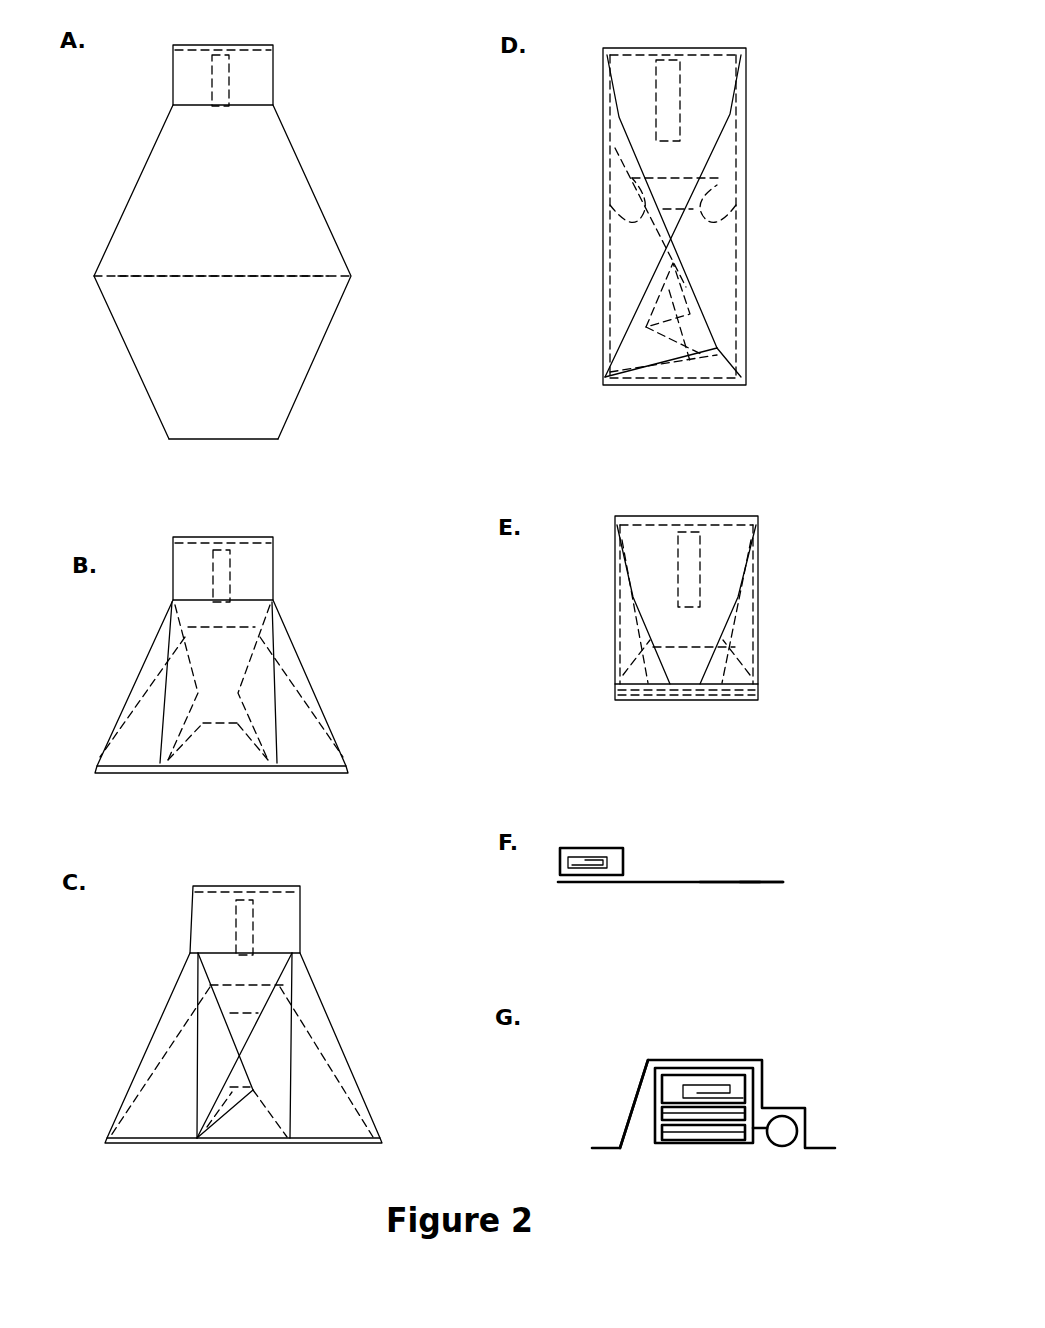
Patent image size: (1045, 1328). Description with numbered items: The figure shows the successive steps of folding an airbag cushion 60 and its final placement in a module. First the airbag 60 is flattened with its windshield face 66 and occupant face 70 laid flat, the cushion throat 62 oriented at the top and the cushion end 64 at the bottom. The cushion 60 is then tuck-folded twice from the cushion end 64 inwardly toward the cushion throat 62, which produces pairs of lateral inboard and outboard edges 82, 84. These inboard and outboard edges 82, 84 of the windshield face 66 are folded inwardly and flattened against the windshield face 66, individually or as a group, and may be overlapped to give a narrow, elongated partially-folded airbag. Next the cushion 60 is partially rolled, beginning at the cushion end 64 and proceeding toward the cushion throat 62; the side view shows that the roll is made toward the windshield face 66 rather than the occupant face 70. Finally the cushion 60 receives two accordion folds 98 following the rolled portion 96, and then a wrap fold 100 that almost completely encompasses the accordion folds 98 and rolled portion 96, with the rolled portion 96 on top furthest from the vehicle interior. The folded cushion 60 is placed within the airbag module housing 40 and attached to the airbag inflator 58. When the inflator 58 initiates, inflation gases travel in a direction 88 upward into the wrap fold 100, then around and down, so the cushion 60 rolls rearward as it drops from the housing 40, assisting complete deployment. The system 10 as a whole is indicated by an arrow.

In FIG. 2G, the system 10 is at (618, 1068).
In FIG. 2G, the airbag module housing 40 is at (627, 1123).
In FIG. 2G, the airbag inflator 58 is at (785, 1127).
In FIG. 2A, the airbag cushion 60 is at (233, 241).
In FIG. 2B, the airbag cushion 60 is at (235, 653).
In FIG. 2C, the airbag cushion 60 is at (275, 1015).
In FIG. 2D, the airbag cushion 60 is at (715, 221).
In FIG. 2E, the airbag cushion 60 is at (749, 595).
In FIG. 2F, the airbag cushion 60 is at (716, 862).
In FIG. 2G, the airbag cushion 60 is at (707, 1109).
In FIG. 2A, the cushion throat 62 is at (252, 60).
In FIG. 2B, the cushion throat 62 is at (262, 563).
In FIG. 2C, the cushion throat 62 is at (287, 913).
In FIG. 2D, the cushion throat 62 is at (721, 74).
In FIG. 2E, the cushion throat 62 is at (737, 538).
In FIG. 2F, the cushion throat 62 is at (783, 883).
In FIG. 2A, the cushion end 64 is at (248, 431).
In FIG. 2B, the cushion end 64 is at (330, 773).
In FIG. 2C, the cushion end 64 is at (340, 1143).
In FIG. 2D, the cushion end 64 is at (717, 374).
In FIG. 2A, the windshield face 66 is at (227, 250).
In FIG. 2B, the windshield face 66 is at (235, 752).
In FIG. 2C, the windshield face 66 is at (255, 1136).
In FIG. 2D, the windshield face 66 is at (677, 362).
In FIG. 2F, the windshield face 66 is at (713, 882).
In FIG. 2A, the occupant face 70 is at (227, 208).
In FIG. 2B, the occupant face 70 is at (235, 666).
In FIG. 2C, the occupant face 70 is at (246, 1001).
In FIG. 2D, the occupant face 70 is at (676, 193).
In FIG. 2E, the occupant face 70 is at (694, 661).
In FIG. 2F, the occupant face 70 is at (740, 883).
In FIG. 2A, the inboard edge 82 is at (308, 189).
In FIG. 2B, the inboard edge 82 is at (317, 693).
In FIG. 2C, the inboard edge 82 is at (330, 1104).
In FIG. 2D, the inboard edge 82 is at (739, 231).
In FIG. 2A, the outboard edge 84 is at (115, 189).
In FIG. 2B, the outboard edge 84 is at (128, 692).
In FIG. 2C, the outboard edge 84 is at (177, 1104).
In FIG. 2D, the outboard edge 84 is at (597, 238).
In FIG. 2G, the direction of inflation gases 88 is at (758, 1133).
In FIG. 2F, the rolled portion 96 is at (597, 848).
In FIG. 2G, the rolled portion 96 is at (672, 1088).
In FIG. 2G, the accordion folds 98 is at (697, 1123).
In FIG. 2G, the wrap fold 100 is at (653, 1115).